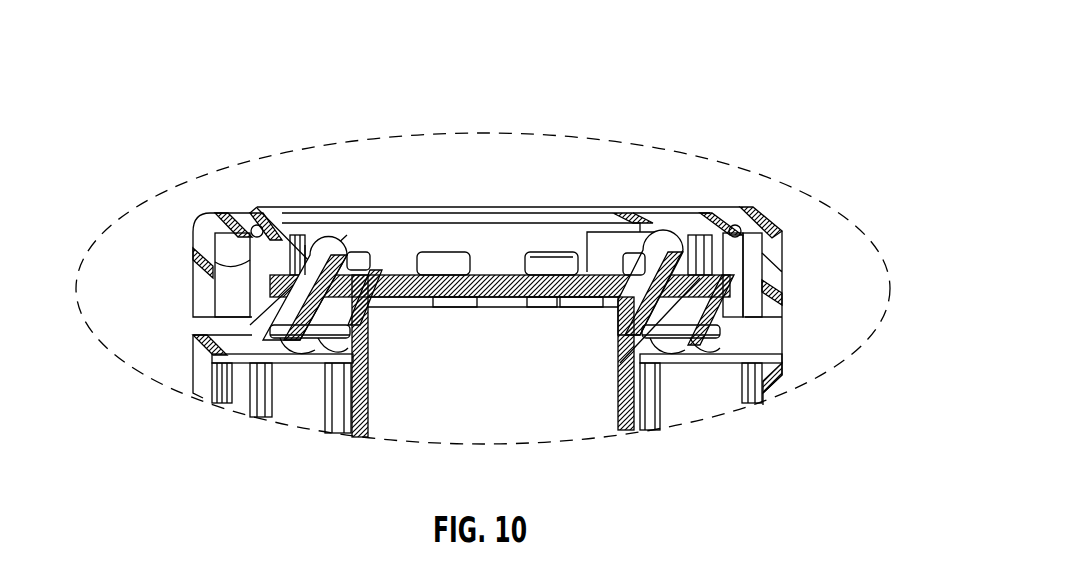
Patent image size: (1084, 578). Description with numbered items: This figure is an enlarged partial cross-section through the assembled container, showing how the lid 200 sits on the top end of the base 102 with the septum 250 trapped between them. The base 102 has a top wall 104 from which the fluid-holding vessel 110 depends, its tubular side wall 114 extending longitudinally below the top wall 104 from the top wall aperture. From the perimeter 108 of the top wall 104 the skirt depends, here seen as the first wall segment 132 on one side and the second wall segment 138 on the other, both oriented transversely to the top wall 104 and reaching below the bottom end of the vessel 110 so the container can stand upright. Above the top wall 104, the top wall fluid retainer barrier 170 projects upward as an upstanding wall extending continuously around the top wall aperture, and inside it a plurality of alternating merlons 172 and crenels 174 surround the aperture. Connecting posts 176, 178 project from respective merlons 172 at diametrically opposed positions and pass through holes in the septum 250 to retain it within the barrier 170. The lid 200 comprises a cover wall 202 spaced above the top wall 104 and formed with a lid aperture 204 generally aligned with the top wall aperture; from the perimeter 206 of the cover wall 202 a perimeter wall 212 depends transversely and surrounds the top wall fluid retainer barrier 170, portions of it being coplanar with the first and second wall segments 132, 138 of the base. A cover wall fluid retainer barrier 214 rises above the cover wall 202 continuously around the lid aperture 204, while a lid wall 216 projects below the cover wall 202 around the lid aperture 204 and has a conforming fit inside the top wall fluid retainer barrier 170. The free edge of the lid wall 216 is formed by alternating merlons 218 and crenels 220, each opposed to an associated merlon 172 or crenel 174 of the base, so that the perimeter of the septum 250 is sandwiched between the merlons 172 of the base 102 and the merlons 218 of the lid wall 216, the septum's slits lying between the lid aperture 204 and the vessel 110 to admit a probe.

The lid 200 is at (781, 223).
The cover wall 202 is at (753, 208).
The lid aperture 204 is at (407, 207).
The perimeter of the cover wall 206 is at (215, 213).
The perimeter wall 212 is at (782, 284).
The cover wall fluid retainer barrier 214 is at (270, 210).
The lid wall 216 is at (329, 235).
The merlons of the lid wall 218 is at (525, 303).
The crenels of the lid wall 220 is at (560, 257).
The septum 250 is at (580, 263).
The top wall fluid retainer barrier 170 is at (215, 262).
The merlons 172 is at (222, 395).
The crenels 174 is at (450, 305).
The connecting post 176 is at (682, 250).
The connecting post 178 is at (318, 235).
The top wall 104 is at (222, 328).
The perimeter of the top wall 108 is at (200, 337).
The vessel 110 is at (337, 433).
The side wall 114 is at (617, 408).
The base 102 is at (787, 370).
The first wall segment 132 is at (780, 368).
The second wall segment 138 is at (195, 383).